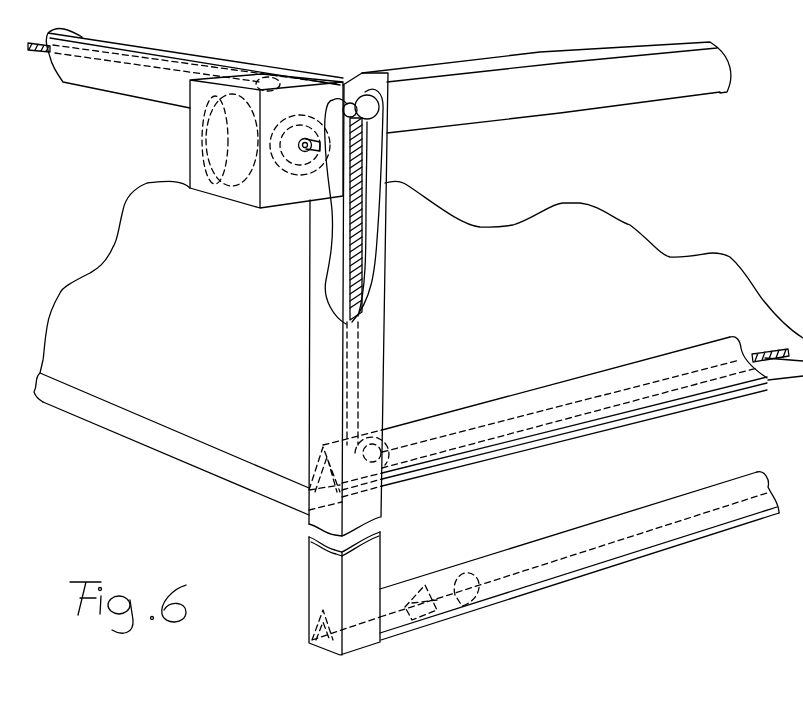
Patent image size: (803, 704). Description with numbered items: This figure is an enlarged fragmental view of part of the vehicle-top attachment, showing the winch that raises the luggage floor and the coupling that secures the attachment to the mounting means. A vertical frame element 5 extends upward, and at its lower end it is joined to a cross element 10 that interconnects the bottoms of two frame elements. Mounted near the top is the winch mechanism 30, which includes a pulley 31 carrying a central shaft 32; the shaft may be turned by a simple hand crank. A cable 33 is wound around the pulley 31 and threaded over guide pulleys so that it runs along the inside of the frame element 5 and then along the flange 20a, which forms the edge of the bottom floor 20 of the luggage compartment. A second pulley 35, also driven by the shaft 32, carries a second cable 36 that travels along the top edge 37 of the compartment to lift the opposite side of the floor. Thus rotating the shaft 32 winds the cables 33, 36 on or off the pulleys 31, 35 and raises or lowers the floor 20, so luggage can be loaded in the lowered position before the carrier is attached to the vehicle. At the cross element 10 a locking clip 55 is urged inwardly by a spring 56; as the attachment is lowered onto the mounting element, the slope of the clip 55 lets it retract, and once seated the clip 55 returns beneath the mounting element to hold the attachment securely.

The top edge 37 is at (133, 42).
The second cable 36 is at (180, 68).
The winch mechanism 30 is at (188, 126).
The second pulley 35 is at (207, 188).
The pulley 31 is at (290, 185).
The central shaft 32 is at (303, 137).
The cable 33 is at (360, 266).
The vertical frame element 5 is at (370, 397).
The bottom floor 20 is at (250, 376).
The flange 20a is at (660, 406).
The cross element 10 is at (555, 575).
The clip 55 is at (467, 567).
The spring 56 is at (437, 590).